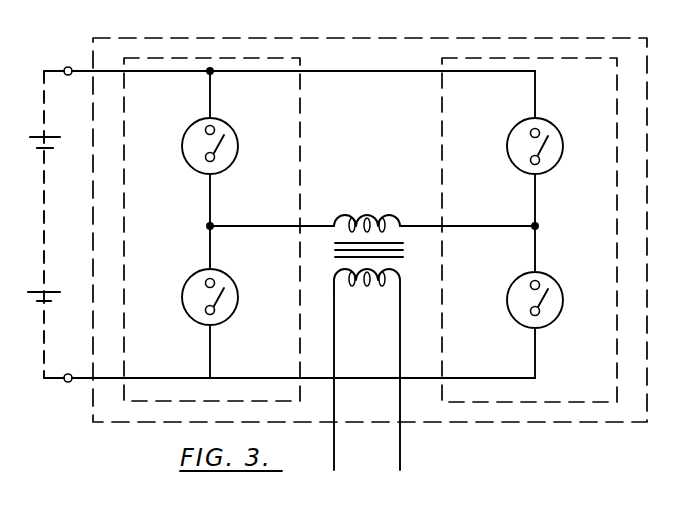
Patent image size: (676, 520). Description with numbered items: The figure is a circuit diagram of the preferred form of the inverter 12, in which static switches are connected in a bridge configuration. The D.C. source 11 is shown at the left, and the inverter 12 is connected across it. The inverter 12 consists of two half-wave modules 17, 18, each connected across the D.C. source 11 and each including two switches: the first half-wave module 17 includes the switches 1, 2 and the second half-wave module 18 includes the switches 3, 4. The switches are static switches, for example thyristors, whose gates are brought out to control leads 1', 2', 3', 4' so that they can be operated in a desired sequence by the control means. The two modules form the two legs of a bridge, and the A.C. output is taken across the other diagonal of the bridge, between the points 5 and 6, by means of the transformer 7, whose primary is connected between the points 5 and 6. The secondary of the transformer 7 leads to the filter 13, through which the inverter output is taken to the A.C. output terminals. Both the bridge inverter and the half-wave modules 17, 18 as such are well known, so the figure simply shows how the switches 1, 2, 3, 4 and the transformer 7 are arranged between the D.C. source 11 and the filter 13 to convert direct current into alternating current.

The switch 1 is at (191, 137).
The control lead 1' is at (184, 144).
The switch 2 is at (192, 288).
The control lead 2' is at (185, 297).
The switch 3 is at (541, 137).
The control lead 3' is at (562, 147).
The switch 4 is at (537, 295).
The control lead 4' is at (558, 298).
The point 5 is at (317, 226).
The point 6 is at (424, 226).
The transformer 7 is at (367, 222).
The D.C. source 11 is at (45, 207).
The inverter 12 is at (543, 38).
The filter 13 is at (379, 397).
The half-wave module 17 is at (147, 56).
The half-wave module 18 is at (476, 57).